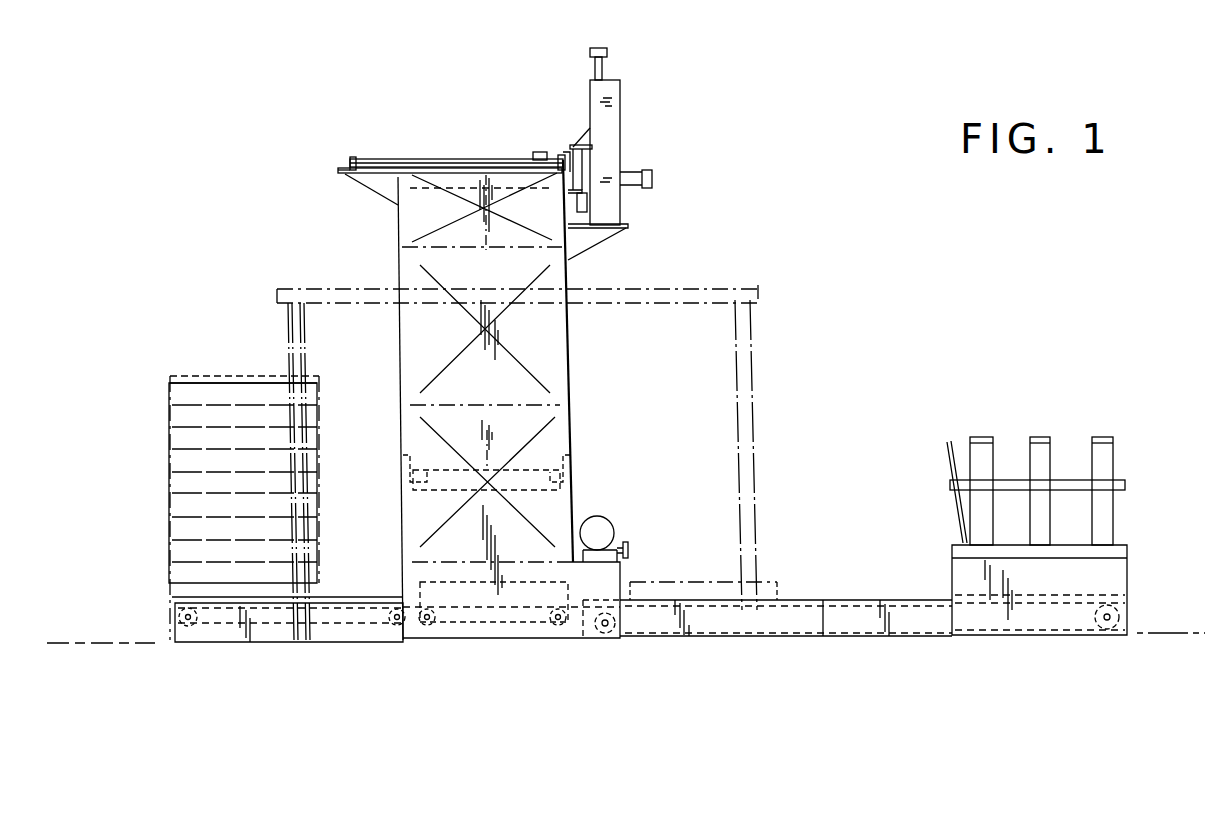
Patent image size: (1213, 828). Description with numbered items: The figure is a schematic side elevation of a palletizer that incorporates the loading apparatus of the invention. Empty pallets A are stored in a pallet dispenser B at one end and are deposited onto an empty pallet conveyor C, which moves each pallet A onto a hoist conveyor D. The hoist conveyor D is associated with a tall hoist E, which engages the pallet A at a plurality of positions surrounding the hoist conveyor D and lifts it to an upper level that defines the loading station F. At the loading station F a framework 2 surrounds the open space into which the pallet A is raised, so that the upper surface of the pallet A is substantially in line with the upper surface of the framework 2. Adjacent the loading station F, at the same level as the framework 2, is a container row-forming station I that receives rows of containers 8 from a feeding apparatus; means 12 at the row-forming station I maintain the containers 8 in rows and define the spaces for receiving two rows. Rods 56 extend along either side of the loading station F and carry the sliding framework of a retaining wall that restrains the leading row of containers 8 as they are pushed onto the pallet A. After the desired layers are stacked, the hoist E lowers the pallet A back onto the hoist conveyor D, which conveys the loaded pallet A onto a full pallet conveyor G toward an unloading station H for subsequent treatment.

The framework 2 is at (370, 175).
The rods 56 is at (436, 160).
The row-maintaining means 12 is at (567, 152).
The containers 8 is at (170, 382).
The pallet A is at (470, 188).
The pallet dispenser B is at (1127, 576).
The empty pallet conveyor C is at (917, 633).
The hoist conveyor D is at (503, 624).
The hoist E is at (573, 406).
The loading station F is at (348, 161).
The full pallet conveyor G is at (355, 624).
The unloading station H is at (171, 466).
The container row-forming station I is at (583, 208).